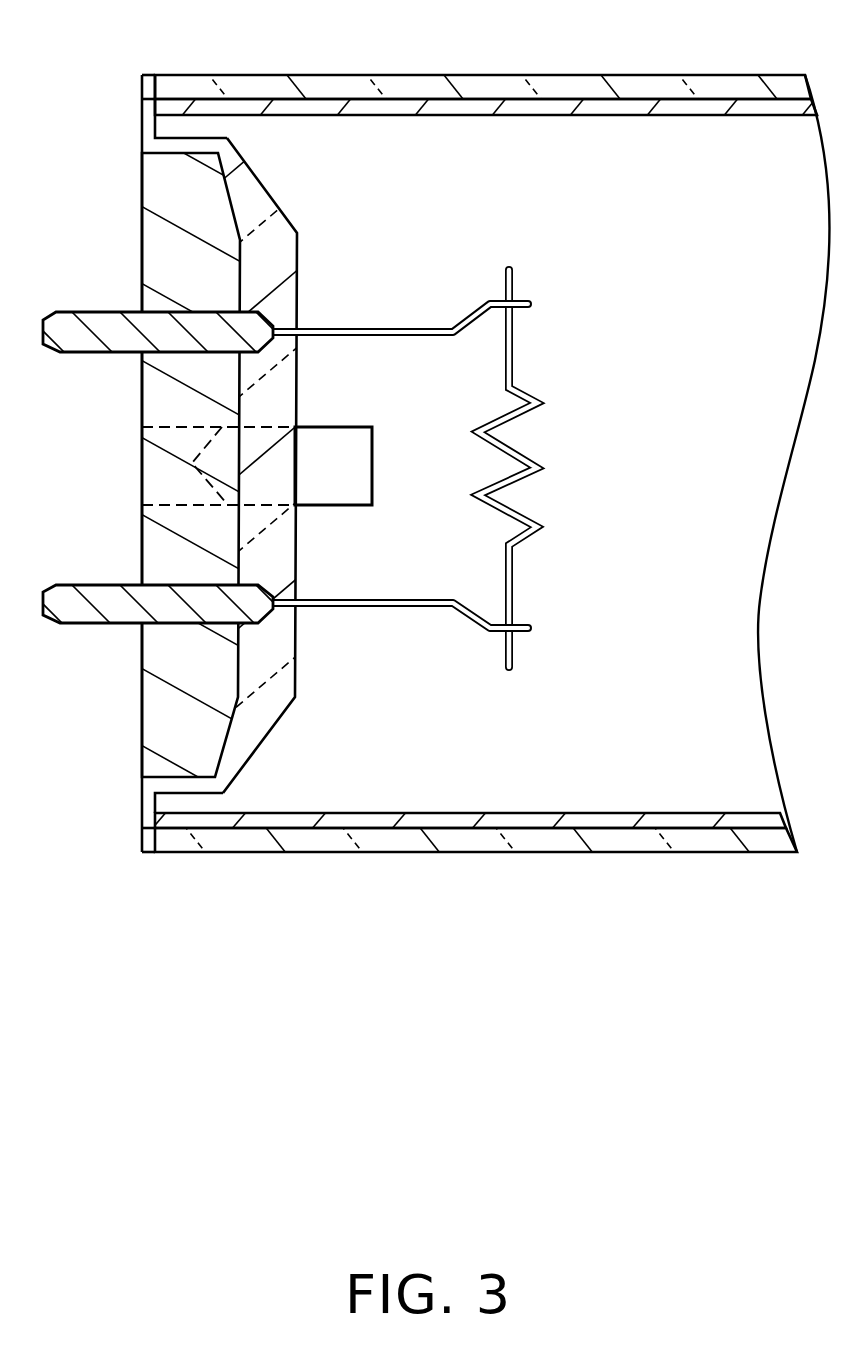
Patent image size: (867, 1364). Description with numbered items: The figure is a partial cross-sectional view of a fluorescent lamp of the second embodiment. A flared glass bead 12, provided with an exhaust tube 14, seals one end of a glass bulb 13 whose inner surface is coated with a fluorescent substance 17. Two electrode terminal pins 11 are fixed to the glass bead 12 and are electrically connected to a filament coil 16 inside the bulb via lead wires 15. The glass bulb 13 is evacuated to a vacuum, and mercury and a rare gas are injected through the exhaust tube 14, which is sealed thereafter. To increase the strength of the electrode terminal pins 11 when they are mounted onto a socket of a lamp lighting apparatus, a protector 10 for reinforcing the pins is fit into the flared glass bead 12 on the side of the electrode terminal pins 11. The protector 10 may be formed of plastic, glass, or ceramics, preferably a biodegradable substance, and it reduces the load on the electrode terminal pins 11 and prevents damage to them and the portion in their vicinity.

The protector 10 is at (160, 740).
The electrode terminal pins 11 is at (50, 312).
The glass bead 12 is at (150, 130).
The glass bulb 13 is at (553, 88).
The exhaust tube 14 is at (332, 433).
The lead wires 15 is at (408, 327).
The filament coil 16 is at (515, 380).
The fluorescent substance 17 is at (628, 108).